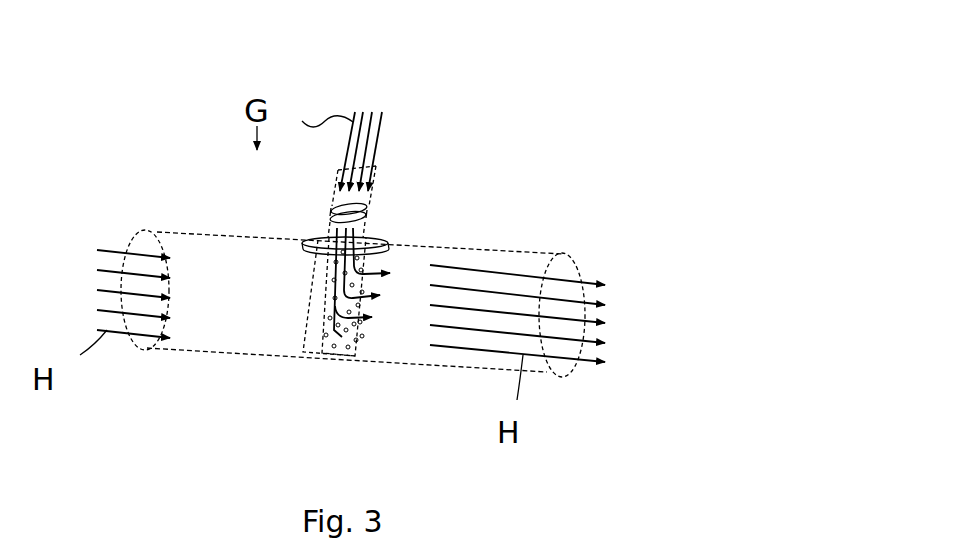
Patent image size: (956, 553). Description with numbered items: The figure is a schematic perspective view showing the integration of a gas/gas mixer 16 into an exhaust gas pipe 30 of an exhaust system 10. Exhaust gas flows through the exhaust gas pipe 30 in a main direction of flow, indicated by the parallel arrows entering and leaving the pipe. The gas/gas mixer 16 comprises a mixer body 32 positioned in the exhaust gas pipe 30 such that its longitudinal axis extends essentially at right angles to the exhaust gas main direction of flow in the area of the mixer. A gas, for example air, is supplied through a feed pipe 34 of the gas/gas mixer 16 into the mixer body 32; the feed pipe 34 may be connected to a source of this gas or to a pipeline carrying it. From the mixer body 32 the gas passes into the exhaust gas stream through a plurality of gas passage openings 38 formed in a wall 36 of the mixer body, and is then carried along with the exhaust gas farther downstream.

The exhaust system 10 is at (638, 156).
The gas/gas mixer 16 is at (400, 227).
The exhaust gas pipe 30 is at (205, 234).
The mixer body 32 is at (307, 311).
The feed pipe 34 is at (373, 201).
The wall 36 is at (320, 278).
The gas passage openings 38 is at (328, 337).